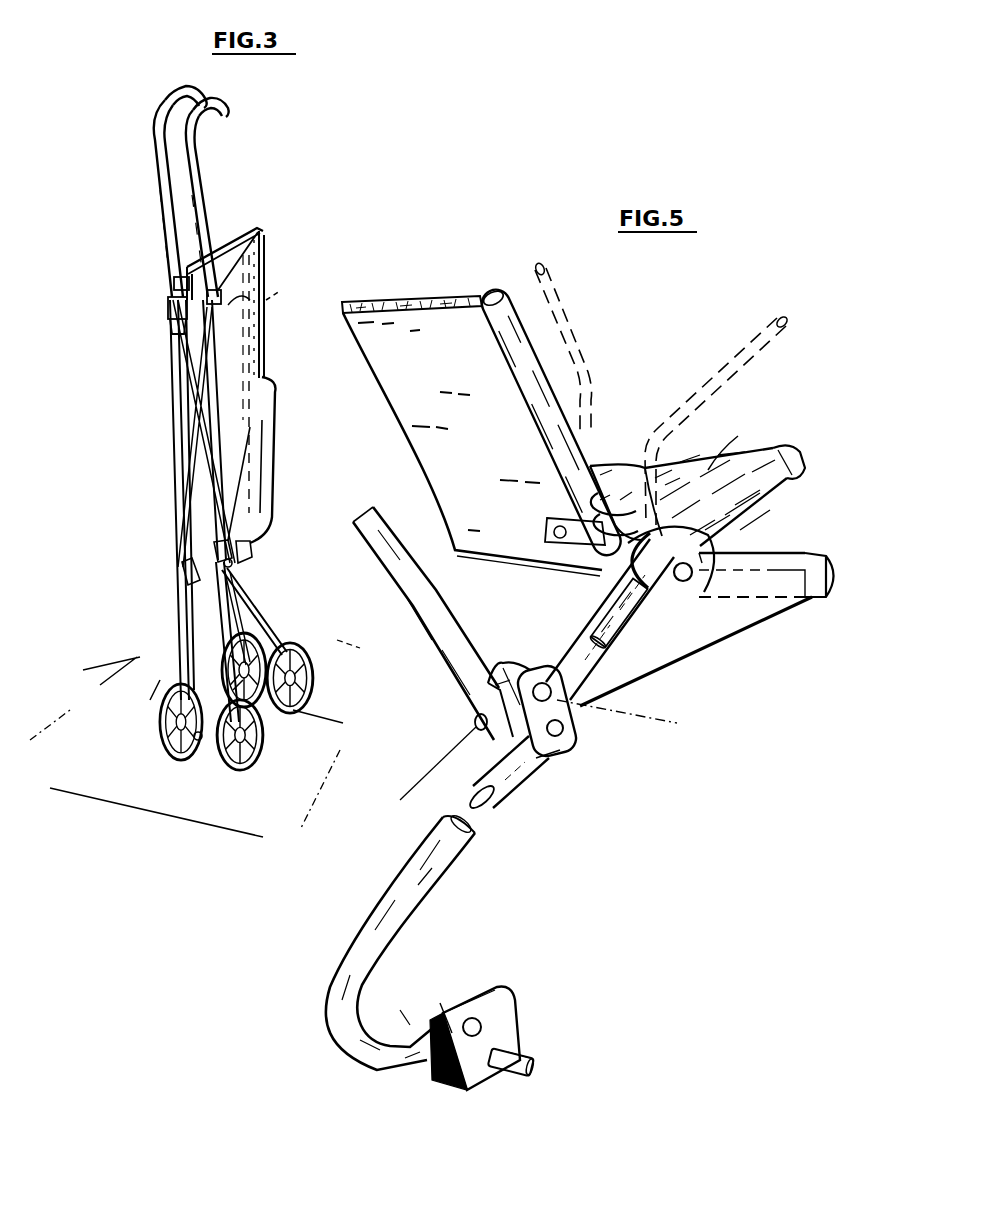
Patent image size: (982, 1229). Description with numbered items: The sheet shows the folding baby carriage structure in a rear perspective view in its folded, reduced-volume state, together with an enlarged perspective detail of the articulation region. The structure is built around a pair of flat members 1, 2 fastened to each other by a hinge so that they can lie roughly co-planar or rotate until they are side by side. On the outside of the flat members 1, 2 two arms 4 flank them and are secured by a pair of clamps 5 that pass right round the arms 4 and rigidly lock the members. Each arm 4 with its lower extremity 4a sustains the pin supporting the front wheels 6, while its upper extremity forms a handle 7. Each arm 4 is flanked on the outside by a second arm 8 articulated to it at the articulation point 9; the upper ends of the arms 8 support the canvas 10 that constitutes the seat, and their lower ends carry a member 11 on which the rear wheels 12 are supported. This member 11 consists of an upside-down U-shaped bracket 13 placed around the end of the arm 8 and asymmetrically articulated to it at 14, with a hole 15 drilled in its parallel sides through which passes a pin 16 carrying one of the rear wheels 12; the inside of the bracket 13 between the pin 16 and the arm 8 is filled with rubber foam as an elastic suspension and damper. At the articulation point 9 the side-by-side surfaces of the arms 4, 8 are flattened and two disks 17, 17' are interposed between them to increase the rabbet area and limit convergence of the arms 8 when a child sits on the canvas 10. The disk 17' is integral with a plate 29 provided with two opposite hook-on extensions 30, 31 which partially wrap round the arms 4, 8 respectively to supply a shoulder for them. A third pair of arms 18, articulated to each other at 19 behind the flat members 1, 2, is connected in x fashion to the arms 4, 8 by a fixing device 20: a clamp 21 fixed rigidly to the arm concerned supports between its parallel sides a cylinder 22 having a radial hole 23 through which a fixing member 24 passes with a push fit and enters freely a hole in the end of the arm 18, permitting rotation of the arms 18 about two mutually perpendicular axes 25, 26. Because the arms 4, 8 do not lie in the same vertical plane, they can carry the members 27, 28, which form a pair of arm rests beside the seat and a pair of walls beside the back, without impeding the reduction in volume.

In FIG. 3, the flat member 1 is at (255, 262).
In FIG. 5, the flat member 1 is at (443, 305).
In FIG. 3, the flat member 2 is at (232, 232).
In FIG. 5, the flat member 2 is at (551, 422).
In FIG. 3, the arm 4 is at (166, 178).
In FIG. 3, the lower extremity 4a is at (277, 647).
In FIG. 3, the clamp 5 is at (180, 318).
In FIG. 5, the clamp 5 is at (547, 522).
In FIG. 3, the front wheel 6 is at (313, 690).
In FIG. 3, the handle 7 is at (172, 104).
In FIG. 3, the second arm 8 is at (178, 675).
In FIG. 5, the second arm 8 is at (455, 865).
In FIG. 3, the articulation point 9 is at (233, 563).
In FIG. 5, the articulation point 9 is at (683, 590).
In FIG. 3, the canvas 10 is at (252, 422).
In FIG. 5, the canvas 10 is at (608, 460).
In FIG. 3, the member 11 is at (198, 742).
In FIG. 5, the member 11 is at (438, 1002).
In FIG. 3, the rear wheel 12 is at (172, 757).
In FIG. 5, the U-shaped bracket 13 is at (462, 1010).
In FIG. 5, the articulation 14 is at (480, 1024).
In FIG. 5, the hole 15 is at (496, 1048).
In FIG. 5, the pin 16 is at (520, 1076).
In FIG. 5, the disk 17 is at (730, 486).
In FIG. 5, the disk 17' is at (736, 440).
In FIG. 3, the third arm 18 is at (200, 368).
In FIG. 5, the third arm 18 is at (436, 592).
In FIG. 3, the articulation point 19 is at (190, 467).
In FIG. 3, the fixing device 20 is at (170, 295).
In FIG. 5, the fixing device 20 is at (548, 768).
In FIG. 5, the clamp 21 is at (565, 745).
In FIG. 5, the cylinder 22 is at (520, 668).
In FIG. 5, the radial hole 23 is at (505, 670).
In FIG. 5, the fixing member 24 is at (475, 722).
In FIG. 5, the axis 25 is at (618, 712).
In FIG. 5, the axis 26 is at (438, 773).
In FIG. 3, the arm rest 27 is at (243, 420).
In FIG. 5, the arm rest 27 is at (695, 392).
In FIG. 3, the wall 28 is at (288, 283).
In FIG. 5, the wall 28 is at (572, 318).
In FIG. 5, the plate 29 is at (698, 660).
In FIG. 3, the hook-on extension 30 is at (250, 550).
In FIG. 5, the hook-on extension 30 is at (760, 552).
In FIG. 3, the hook-on extension 31 is at (225, 596).
In FIG. 5, the hook-on extension 31 is at (620, 603).